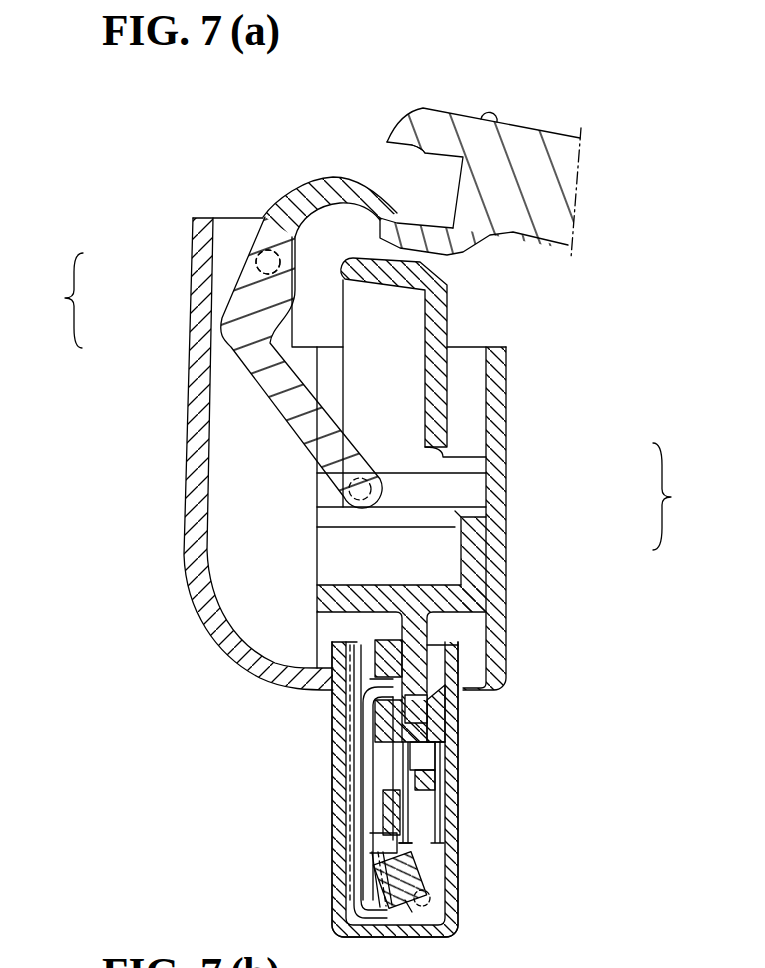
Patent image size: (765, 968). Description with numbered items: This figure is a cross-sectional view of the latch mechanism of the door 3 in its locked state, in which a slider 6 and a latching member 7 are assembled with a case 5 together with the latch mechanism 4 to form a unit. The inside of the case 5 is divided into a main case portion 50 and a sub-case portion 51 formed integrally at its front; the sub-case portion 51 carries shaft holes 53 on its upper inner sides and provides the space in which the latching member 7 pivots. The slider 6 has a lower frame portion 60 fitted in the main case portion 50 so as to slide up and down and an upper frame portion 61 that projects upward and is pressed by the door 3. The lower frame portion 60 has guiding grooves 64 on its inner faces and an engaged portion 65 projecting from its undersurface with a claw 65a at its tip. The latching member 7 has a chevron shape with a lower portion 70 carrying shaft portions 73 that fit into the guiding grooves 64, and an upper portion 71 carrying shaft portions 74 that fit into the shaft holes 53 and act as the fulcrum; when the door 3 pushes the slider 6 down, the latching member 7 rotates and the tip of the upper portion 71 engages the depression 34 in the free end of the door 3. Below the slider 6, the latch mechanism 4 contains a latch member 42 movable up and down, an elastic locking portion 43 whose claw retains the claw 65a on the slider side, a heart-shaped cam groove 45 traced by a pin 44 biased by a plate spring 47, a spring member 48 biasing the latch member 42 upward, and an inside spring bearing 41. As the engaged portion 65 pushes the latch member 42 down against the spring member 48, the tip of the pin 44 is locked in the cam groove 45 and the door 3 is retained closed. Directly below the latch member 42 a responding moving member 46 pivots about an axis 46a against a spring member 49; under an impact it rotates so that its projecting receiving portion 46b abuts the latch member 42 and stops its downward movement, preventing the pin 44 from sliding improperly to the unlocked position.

The door 3 is at (531, 126).
The depression 34 is at (411, 157).
The latch mechanism 4 is at (431, 804).
The case 5 is at (202, 454).
The slider 6 is at (494, 489).
The latching member 7 is at (61, 300).
The spring bearing 41 is at (443, 822).
The latch member 42 is at (460, 709).
The elastic locking portion 43 is at (459, 725).
The pin 44 is at (360, 745).
The heart-shaped cam groove 45 is at (383, 680).
The responding moving member 46 is at (420, 893).
The axis 46a is at (455, 903).
The projecting receiving portion 46b is at (397, 834).
The plate spring 47 is at (372, 858).
The spring member 48 is at (447, 772).
The spring member 49 is at (407, 903).
The main case portion 50 is at (500, 377).
The sub-case portion 51 is at (187, 553).
The shaft holes 53 is at (268, 262).
The lower frame portion 60 is at (473, 560).
The upper frame portion 61 is at (437, 380).
The guiding grooves 64 is at (470, 495).
The engaged portion 65 is at (417, 636).
The claw 65a is at (445, 720).
The lower portion 70 is at (245, 365).
The upper portion 71 is at (243, 283).
The shaft portions 73 is at (348, 490).
The shaft portions 74 is at (255, 248).